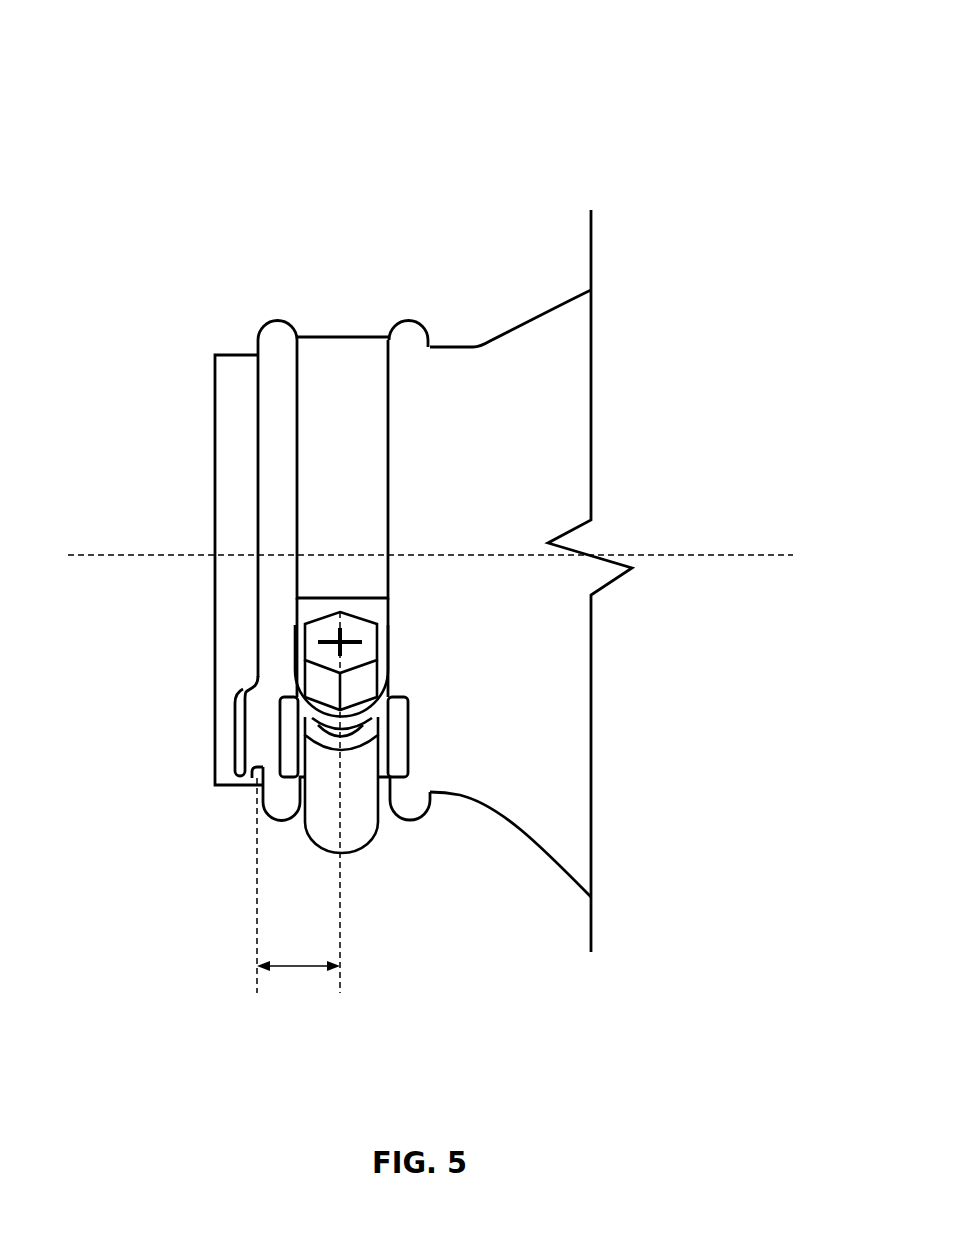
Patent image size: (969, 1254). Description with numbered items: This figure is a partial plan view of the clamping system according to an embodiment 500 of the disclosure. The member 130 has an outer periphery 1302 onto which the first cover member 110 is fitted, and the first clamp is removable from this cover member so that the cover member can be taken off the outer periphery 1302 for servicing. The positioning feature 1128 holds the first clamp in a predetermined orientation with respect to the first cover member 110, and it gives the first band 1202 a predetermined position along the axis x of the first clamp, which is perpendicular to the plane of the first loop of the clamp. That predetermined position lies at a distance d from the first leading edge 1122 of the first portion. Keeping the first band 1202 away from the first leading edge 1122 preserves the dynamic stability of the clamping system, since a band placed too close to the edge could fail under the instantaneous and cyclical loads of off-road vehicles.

The embodiment 500 is at (152, 89).
The first cover member 110 is at (535, 400).
The positioning feature 1128 is at (410, 318).
The first leading edge 1122 is at (257, 528).
The first band 1202 is at (357, 515).
The member 130 is at (215, 593).
The outer periphery 1302 is at (242, 628).